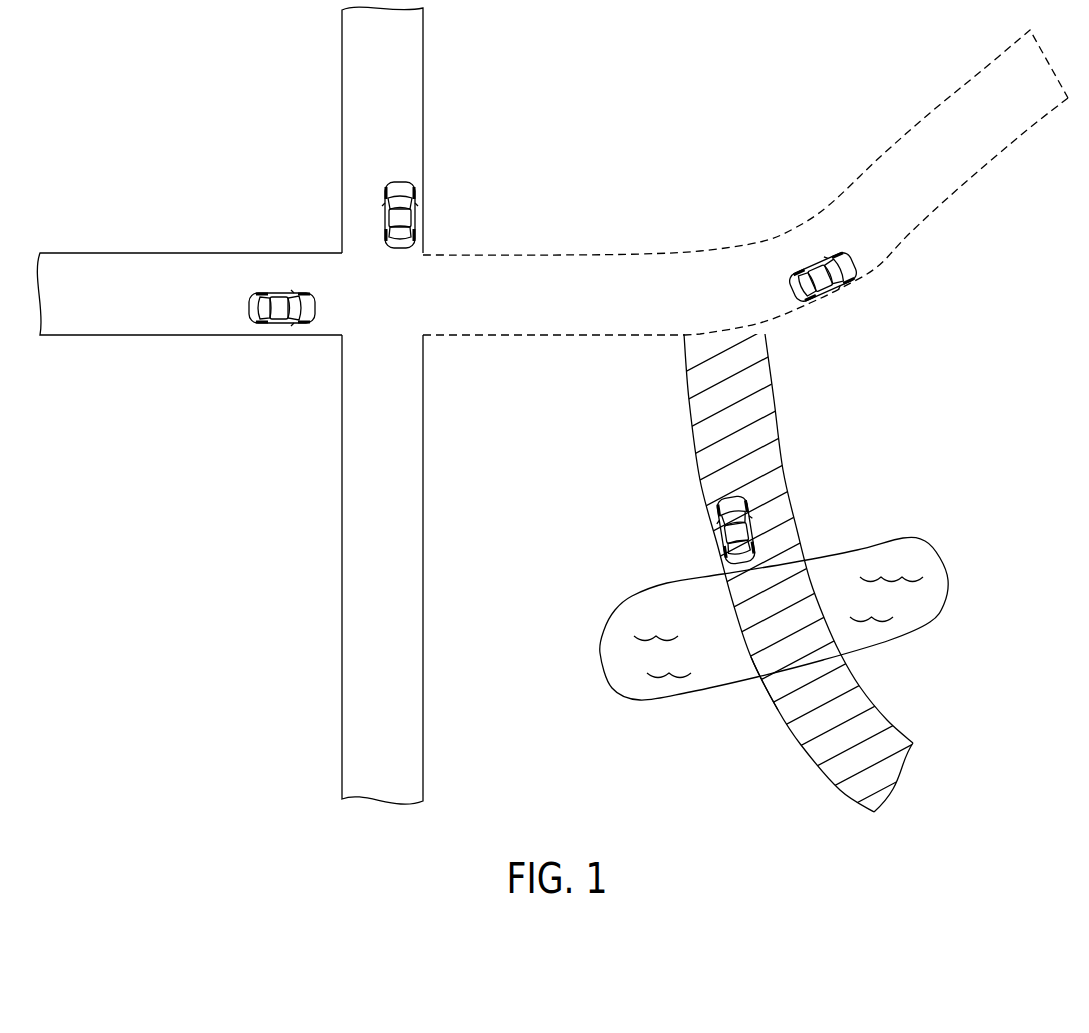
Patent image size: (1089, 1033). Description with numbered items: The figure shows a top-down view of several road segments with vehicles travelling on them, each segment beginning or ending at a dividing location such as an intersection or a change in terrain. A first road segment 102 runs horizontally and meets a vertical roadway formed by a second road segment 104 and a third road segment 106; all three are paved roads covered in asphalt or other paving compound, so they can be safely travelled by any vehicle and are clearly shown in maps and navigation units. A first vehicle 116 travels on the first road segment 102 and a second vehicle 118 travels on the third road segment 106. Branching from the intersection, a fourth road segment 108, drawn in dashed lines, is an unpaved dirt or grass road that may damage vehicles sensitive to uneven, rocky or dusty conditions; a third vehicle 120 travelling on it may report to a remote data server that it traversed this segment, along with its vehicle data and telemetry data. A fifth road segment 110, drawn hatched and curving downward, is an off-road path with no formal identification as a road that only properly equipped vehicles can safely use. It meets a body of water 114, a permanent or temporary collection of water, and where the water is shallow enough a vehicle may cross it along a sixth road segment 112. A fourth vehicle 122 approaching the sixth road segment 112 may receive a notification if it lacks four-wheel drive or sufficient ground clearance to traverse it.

The first road segment 102 is at (127, 318).
The second road segment 104 is at (409, 521).
The third road segment 106 is at (409, 115).
The fourth road segment 108 is at (533, 268).
The fifth road segment 110 is at (765, 441).
The sixth road segment 112 is at (767, 655).
The body of water 114 is at (910, 552).
The first vehicle 116 is at (278, 323).
The second vehicle 118 is at (413, 222).
The third vehicle 120 is at (829, 292).
The fourth vehicle 122 is at (722, 540).